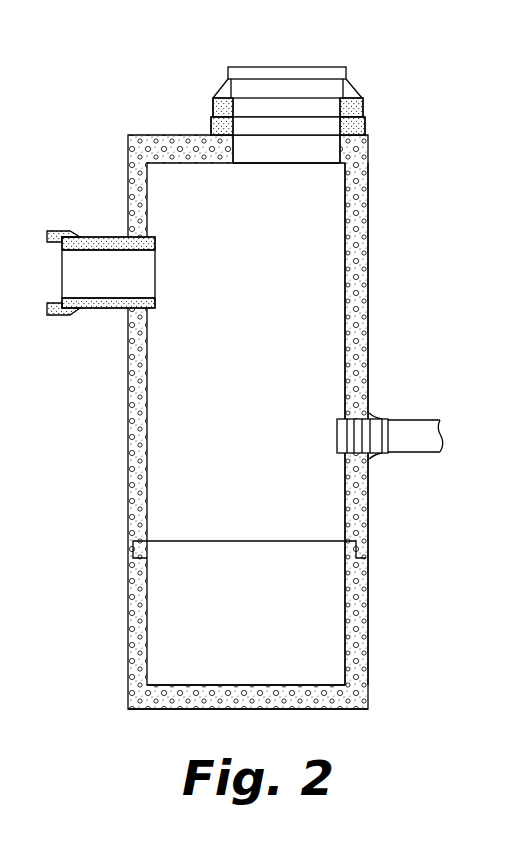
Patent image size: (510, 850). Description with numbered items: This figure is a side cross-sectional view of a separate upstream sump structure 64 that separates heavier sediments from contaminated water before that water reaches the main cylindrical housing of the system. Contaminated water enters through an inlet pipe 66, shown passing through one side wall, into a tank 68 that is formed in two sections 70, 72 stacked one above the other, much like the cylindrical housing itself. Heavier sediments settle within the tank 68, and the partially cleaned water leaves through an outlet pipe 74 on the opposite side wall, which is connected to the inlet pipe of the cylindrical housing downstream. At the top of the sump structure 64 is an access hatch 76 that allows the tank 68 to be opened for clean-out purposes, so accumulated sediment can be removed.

The upstream sump structure 64 is at (72, 698).
The inlet pipe 66 is at (78, 232).
The tank 68 is at (369, 276).
The section 70 is at (369, 524).
The section 72 is at (369, 600).
The outlet pipe 74 is at (398, 419).
The access hatch 76 is at (278, 66).